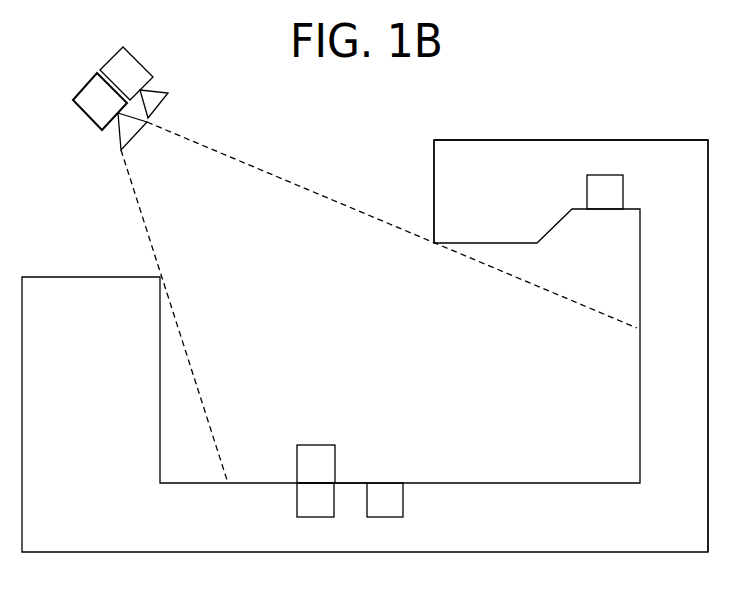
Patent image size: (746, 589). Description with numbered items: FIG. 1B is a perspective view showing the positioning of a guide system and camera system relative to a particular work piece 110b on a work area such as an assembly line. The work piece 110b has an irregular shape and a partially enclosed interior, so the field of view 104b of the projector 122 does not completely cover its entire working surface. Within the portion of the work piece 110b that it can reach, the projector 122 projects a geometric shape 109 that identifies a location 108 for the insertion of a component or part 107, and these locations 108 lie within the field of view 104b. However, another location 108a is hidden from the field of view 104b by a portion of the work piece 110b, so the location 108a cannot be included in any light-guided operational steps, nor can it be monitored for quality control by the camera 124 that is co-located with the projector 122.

The projector 122 is at (71, 100).
The camera 124 is at (112, 57).
The field of view 104b is at (222, 154).
The work piece 110b is at (468, 140).
The location 108a is at (565, 193).
The component or part 107 is at (307, 444).
The location 108 is at (282, 510).
The geometric shape 109 is at (375, 458).